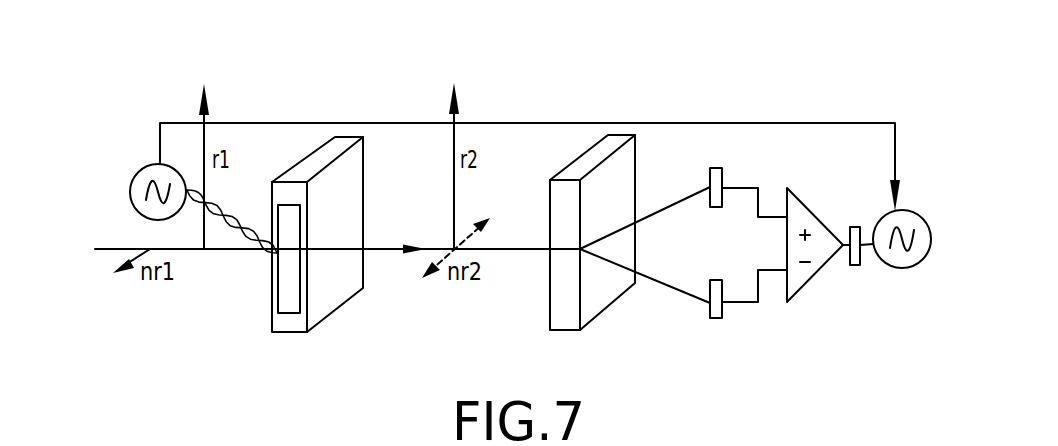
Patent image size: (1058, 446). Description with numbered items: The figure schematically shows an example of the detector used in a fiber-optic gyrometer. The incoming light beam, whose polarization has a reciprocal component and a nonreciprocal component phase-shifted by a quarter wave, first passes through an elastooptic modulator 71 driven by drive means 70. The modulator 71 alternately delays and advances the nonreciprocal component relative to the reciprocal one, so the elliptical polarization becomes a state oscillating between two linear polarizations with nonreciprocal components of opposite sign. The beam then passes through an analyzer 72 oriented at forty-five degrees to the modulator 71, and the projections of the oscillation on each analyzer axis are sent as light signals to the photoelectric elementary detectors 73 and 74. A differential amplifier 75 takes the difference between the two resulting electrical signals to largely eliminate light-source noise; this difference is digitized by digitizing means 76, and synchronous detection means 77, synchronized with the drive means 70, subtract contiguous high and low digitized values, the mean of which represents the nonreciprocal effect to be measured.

The drive means 70 is at (130, 183).
The elastooptic modulator 71 is at (337, 292).
The analyzer 72 is at (563, 312).
The photoelectric elementary detector 73 is at (722, 180).
The photoelectric elementary detector 74 is at (722, 310).
The differential amplifier 75 is at (802, 272).
The digitizing means 76 is at (853, 225).
The synchronous detection means 77 is at (903, 268).